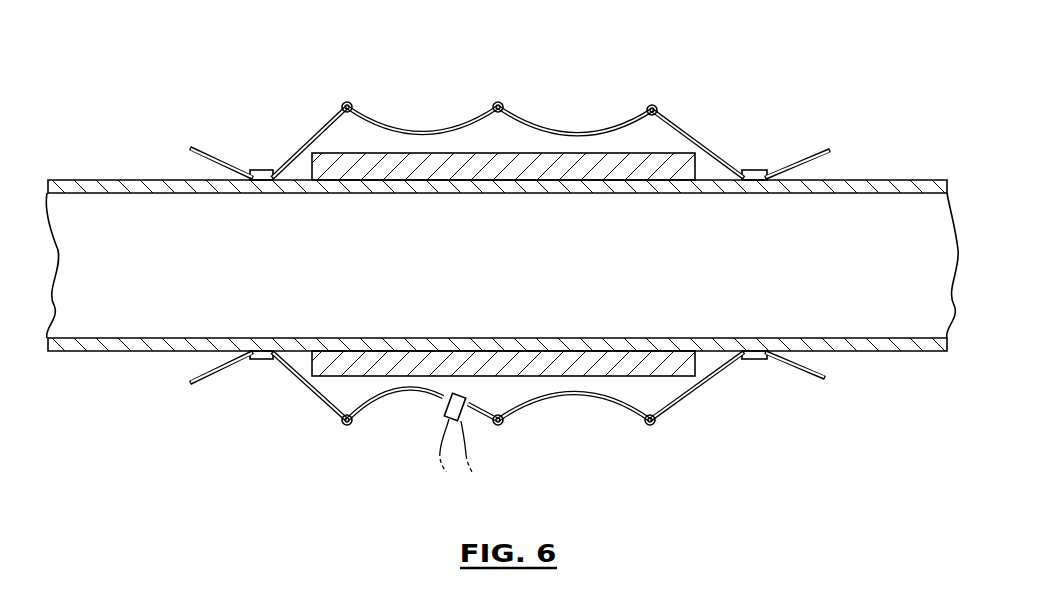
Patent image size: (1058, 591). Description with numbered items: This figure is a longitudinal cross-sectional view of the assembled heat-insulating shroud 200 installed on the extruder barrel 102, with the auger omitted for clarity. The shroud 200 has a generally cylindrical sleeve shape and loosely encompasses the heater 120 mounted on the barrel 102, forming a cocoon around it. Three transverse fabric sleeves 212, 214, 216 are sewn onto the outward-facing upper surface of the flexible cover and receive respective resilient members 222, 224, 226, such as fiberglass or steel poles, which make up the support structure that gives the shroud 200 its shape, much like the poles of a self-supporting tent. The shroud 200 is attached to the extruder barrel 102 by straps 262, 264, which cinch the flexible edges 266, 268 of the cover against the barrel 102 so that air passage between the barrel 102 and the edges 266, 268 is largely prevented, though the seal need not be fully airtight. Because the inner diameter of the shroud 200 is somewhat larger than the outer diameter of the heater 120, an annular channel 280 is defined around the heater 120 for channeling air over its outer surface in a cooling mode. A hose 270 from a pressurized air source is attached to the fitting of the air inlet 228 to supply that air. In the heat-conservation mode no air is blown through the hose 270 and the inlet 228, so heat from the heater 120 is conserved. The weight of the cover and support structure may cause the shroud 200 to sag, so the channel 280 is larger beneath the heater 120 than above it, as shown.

The extruder barrel 102 is at (112, 182).
The heater 120 is at (475, 178).
The heat-insulating shroud 200 is at (404, 42).
The transverse fabric sleeve 212 is at (360, 110).
The transverse fabric sleeve 214 is at (506, 109).
The transverse fabric sleeve 216 is at (662, 110).
The resilient member 222 is at (341, 107).
The resilient member 224 is at (496, 103).
The resilient member 226 is at (650, 105).
The air inlet 228 is at (428, 410).
The strap 262 is at (262, 170).
The strap 264 is at (755, 170).
The flexible edge 266 is at (193, 146).
The flexible edge 268 is at (834, 156).
The hose 270 is at (442, 470).
The annular channel 280 is at (499, 261).